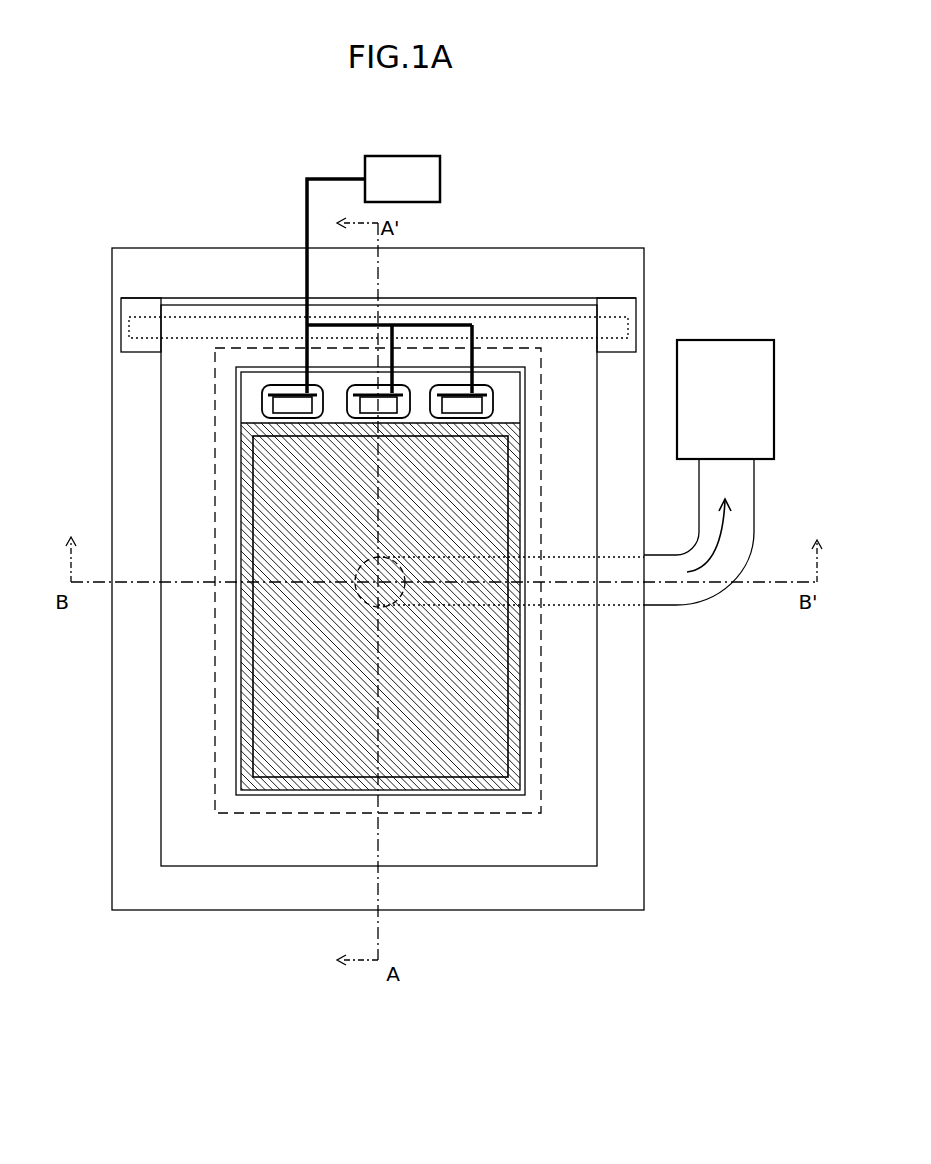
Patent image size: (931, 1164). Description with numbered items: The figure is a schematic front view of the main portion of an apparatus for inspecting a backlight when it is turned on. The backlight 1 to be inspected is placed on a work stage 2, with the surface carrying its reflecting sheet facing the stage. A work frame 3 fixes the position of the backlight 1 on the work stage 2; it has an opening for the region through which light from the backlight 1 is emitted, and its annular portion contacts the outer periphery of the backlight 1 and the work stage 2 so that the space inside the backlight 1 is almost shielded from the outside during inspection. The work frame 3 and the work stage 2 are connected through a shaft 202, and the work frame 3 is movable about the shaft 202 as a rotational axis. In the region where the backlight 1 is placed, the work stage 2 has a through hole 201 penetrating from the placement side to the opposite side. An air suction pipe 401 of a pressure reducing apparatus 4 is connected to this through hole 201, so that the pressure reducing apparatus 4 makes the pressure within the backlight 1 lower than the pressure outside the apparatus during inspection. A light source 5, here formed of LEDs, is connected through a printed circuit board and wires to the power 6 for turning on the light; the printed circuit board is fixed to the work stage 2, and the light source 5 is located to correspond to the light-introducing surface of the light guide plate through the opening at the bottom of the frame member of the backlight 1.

The backlight 1 is at (527, 736).
The work stage 2 is at (526, 913).
The work frame 3 is at (259, 868).
The pressure reducing apparatus 4 is at (724, 358).
The air suction pipe 401 is at (723, 478).
The light source 5 is at (293, 405).
The power for turning on the light 6 is at (402, 178).
The through hole 201 is at (391, 609).
The shaft 202 is at (546, 311).